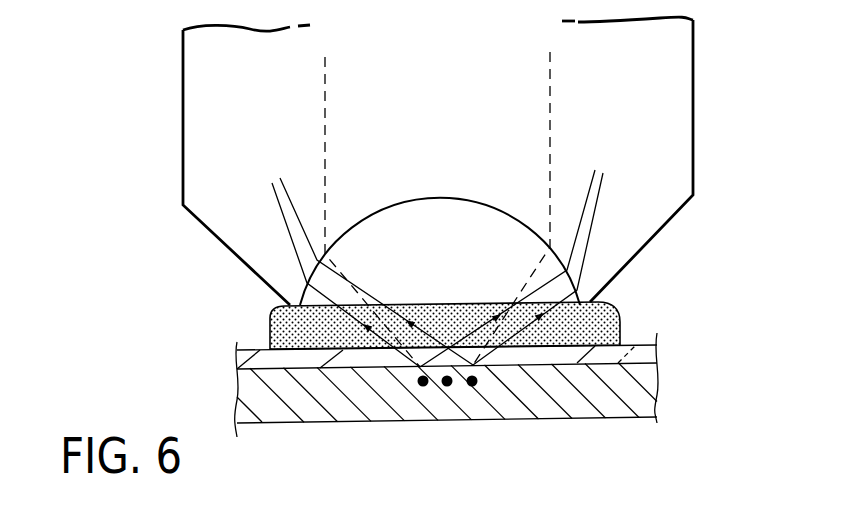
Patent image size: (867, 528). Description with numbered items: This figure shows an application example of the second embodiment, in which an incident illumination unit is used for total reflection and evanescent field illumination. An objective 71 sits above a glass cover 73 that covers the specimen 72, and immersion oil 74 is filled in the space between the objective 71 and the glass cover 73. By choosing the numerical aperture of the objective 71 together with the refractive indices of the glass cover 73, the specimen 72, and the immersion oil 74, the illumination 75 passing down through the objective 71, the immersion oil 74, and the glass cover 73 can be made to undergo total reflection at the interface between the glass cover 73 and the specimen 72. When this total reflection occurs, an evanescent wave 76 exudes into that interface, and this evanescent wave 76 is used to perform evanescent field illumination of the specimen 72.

The objective 71 is at (693, 107).
The specimen 72 is at (615, 405).
The glass cover 73 is at (650, 348).
The immersion oil 74 is at (613, 310).
The illumination 75 is at (292, 220).
The evanescent wave 76 is at (423, 387).